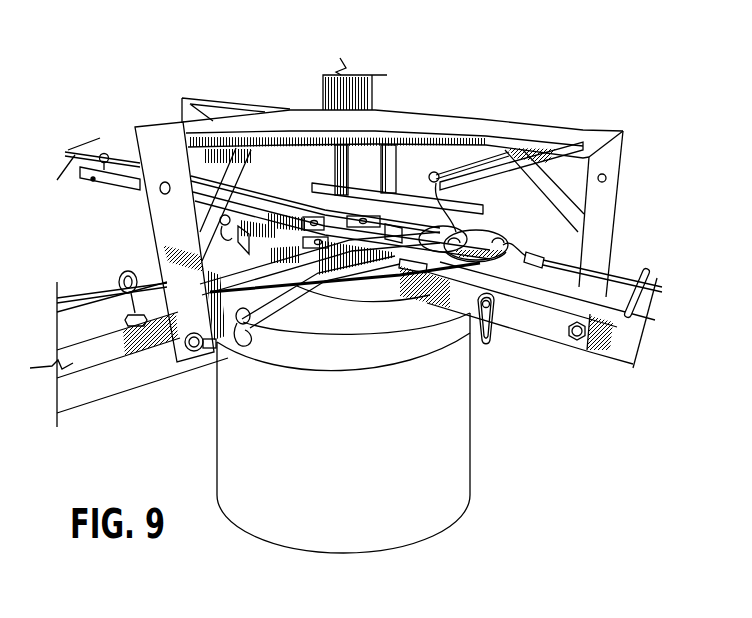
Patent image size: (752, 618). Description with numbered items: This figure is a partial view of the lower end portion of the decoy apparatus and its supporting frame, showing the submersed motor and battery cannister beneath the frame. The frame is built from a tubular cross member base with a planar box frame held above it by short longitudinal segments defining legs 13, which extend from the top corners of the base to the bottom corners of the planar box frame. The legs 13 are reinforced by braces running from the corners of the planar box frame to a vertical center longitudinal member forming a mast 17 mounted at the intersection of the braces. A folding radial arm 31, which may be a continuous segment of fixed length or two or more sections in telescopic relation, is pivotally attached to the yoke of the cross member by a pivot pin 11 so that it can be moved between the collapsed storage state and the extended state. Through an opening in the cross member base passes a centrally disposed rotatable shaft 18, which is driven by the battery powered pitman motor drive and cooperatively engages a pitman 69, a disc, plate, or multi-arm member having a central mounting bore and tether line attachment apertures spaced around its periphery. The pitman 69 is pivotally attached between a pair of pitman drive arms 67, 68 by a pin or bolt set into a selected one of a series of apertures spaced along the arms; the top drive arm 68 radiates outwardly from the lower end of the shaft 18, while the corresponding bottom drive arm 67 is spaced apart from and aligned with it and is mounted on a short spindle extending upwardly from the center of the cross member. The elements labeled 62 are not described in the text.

The pivot pin 11 is at (190, 352).
The legs 13 is at (171, 230).
The mast 17 is at (330, 88).
The rotatable shaft 18 is at (342, 168).
The folding radial arm 31 is at (640, 346).
The adjustment rods 62 is at (118, 160).
The bottom drive arm 67 is at (510, 238).
The top drive arm 68 is at (372, 193).
The pitman 69 is at (489, 230).